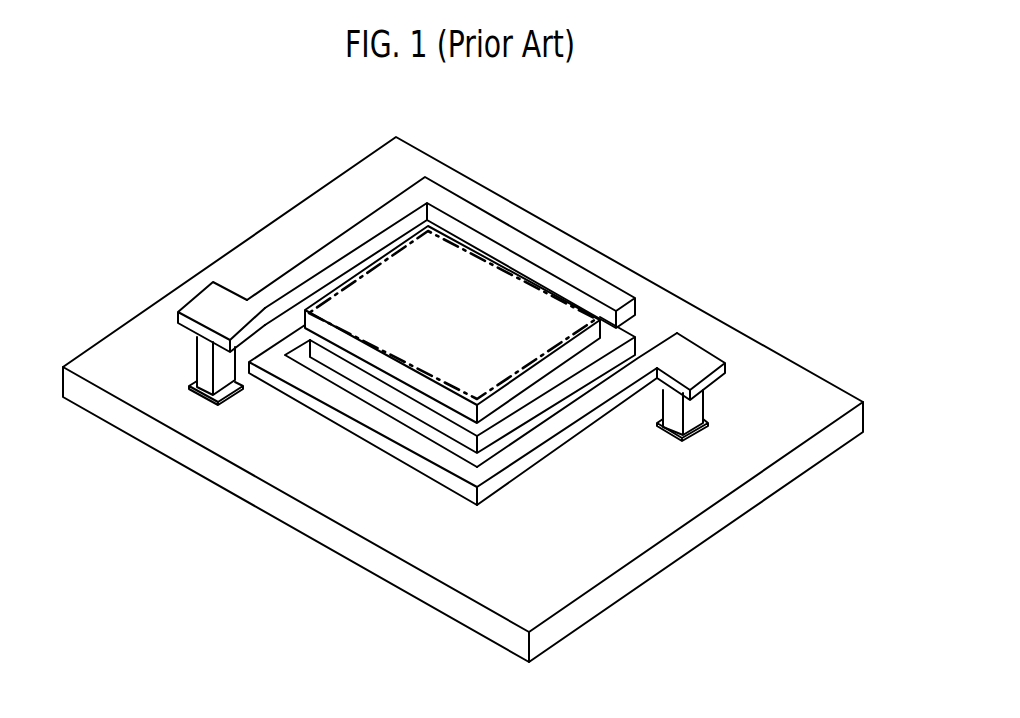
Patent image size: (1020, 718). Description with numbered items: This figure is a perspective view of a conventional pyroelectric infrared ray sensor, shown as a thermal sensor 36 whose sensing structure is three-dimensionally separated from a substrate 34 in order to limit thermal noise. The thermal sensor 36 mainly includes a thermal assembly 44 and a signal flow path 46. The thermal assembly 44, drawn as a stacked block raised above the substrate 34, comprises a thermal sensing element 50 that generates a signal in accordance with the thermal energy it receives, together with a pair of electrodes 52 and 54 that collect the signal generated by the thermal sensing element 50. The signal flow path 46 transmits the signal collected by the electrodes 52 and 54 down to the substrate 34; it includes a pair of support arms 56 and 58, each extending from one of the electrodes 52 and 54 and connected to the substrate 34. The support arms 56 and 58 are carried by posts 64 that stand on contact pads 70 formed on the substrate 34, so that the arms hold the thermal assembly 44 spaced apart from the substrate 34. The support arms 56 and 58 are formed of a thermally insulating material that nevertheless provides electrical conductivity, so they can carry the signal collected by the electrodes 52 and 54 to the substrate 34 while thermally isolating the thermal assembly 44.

The substrate 34 is at (668, 555).
The thermal sensor 36 is at (633, 167).
The thermal assembly 44 is at (641, 324).
The signal flow path 46 is at (338, 233).
The thermal sensing element 50 is at (437, 403).
The electrode 52 is at (350, 367).
The electrode 54 is at (449, 261).
The support arm 56 is at (377, 443).
The support arm 58 is at (597, 280).
The post 64 is at (208, 380).
The contact pad 70 is at (196, 383).